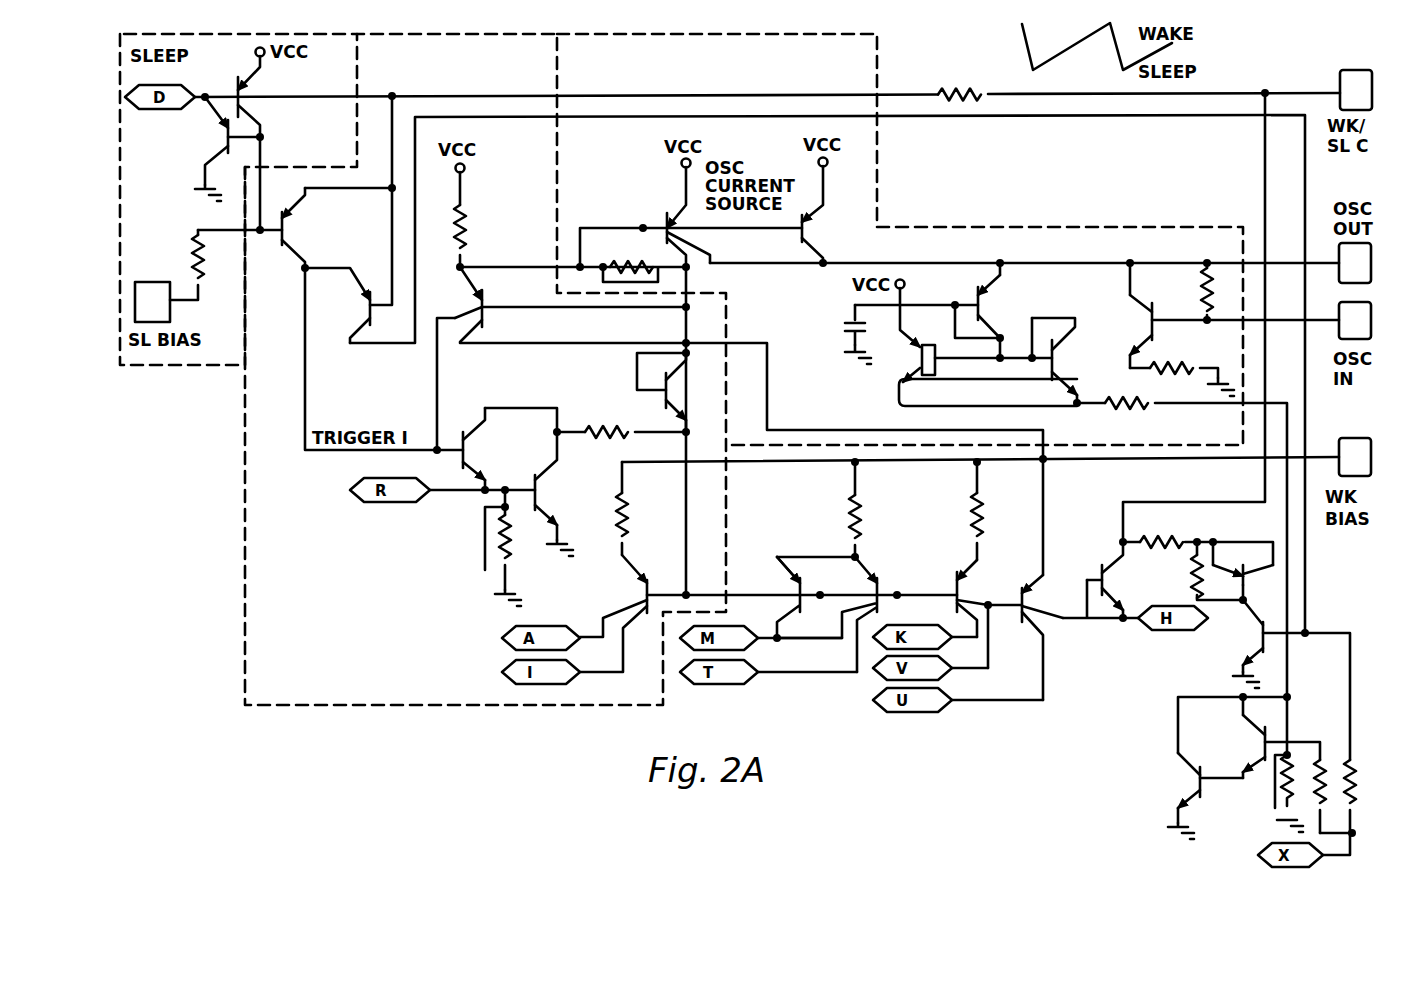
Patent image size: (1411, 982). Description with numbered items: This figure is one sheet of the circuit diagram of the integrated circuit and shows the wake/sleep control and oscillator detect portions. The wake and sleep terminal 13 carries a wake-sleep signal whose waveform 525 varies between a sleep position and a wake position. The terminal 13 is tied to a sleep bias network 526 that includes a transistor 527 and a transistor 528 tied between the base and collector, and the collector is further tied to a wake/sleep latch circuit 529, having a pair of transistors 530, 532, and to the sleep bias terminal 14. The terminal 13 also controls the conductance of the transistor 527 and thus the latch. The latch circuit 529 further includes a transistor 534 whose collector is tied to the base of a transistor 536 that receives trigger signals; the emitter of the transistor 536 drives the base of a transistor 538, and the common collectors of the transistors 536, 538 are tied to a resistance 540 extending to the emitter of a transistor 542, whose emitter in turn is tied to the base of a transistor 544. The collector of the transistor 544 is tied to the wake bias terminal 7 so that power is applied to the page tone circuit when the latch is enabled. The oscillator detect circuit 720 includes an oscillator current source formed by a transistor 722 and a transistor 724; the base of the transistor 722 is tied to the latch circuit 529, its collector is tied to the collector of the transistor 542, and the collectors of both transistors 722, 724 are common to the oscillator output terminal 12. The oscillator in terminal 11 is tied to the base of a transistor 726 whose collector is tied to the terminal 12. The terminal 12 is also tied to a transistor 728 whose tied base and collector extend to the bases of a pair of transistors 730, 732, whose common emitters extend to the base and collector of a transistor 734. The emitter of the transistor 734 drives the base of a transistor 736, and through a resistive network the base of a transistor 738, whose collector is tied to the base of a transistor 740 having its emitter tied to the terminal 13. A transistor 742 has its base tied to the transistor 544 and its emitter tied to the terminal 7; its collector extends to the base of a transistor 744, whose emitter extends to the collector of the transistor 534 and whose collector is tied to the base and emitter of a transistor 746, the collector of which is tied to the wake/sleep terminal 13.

The waveform 525 is at (1064, 50).
The sleep bias network 526 is at (148, 367).
The transistor 527 is at (252, 108).
The transistor 528 is at (208, 148).
The wake/sleep latch circuit 529 is at (244, 570).
The transistor 530 is at (288, 235).
The transistor 532 is at (364, 310).
The transistor 534 is at (486, 298).
The transistor 536 is at (470, 448).
The transistor 538 is at (540, 488).
The resistance 540 is at (610, 432).
The transistor 542 is at (670, 383).
The transistor 544 is at (664, 570).
The oscillator detect circuit 720 is at (1010, 228).
The transistor 722 is at (660, 223).
The transistor 724 is at (808, 232).
The transistor 726 is at (1144, 321).
The transistor 728 is at (984, 305).
The transistor 730 is at (920, 360).
The transistor 732 is at (1056, 358).
The transistor 734 is at (1258, 742).
The transistor 736 is at (1194, 778).
The transistor 738 is at (1257, 634).
The transistor 740 is at (1243, 571).
The transistor 742 is at (962, 582).
The transistor 744 is at (1026, 600).
The transistor 746 is at (1106, 580).
The wake and sleep terminal 13 is at (1356, 90).
The oscillator output terminal 12 is at (1355, 263).
The oscillator in terminal 11 is at (1355, 320).
The wake bias terminal 7 is at (1355, 457).
The sleep bias terminal 14 is at (152, 302).